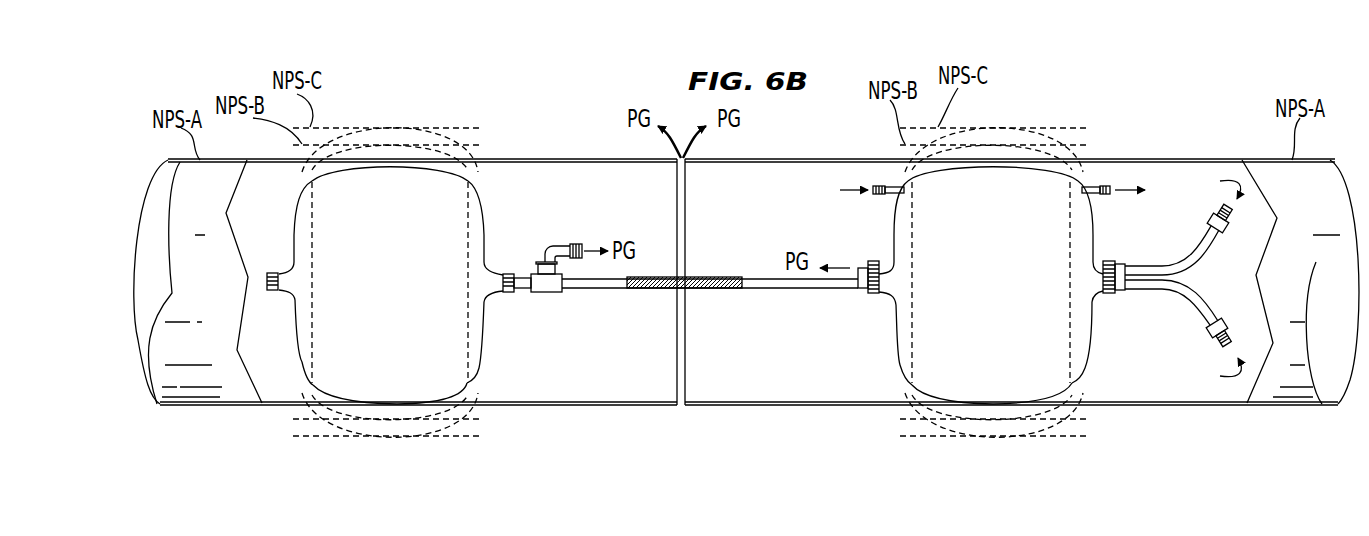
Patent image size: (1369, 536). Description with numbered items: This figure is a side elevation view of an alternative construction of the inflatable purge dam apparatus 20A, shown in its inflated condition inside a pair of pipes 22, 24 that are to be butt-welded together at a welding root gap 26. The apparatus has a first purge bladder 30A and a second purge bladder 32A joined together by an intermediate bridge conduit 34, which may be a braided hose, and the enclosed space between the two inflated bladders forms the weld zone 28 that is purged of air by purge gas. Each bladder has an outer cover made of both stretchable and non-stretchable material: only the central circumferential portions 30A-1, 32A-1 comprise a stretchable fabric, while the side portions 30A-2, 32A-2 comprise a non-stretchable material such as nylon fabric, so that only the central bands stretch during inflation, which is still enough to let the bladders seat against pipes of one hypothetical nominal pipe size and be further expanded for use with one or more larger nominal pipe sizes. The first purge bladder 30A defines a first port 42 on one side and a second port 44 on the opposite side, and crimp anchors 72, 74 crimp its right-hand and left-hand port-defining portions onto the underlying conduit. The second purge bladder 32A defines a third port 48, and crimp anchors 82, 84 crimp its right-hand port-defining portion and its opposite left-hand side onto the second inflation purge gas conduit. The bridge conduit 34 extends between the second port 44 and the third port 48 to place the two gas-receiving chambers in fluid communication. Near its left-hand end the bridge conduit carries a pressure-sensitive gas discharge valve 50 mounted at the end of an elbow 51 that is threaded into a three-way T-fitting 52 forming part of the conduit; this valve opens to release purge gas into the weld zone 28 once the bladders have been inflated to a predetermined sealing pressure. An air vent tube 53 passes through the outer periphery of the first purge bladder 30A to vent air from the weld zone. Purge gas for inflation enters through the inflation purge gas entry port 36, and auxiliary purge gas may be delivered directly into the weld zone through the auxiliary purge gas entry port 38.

The inflatable purge dam apparatus 20A is at (1088, 175).
The pipe 22 is at (1272, 385).
The pipe 24 is at (226, 383).
The welding root gap 26 is at (682, 410).
The weld zone 28 is at (770, 220).
The first purge bladder 30A is at (976, 321).
The central circumferential portion 30A-1 is at (975, 378).
The side portion 30A-2 is at (908, 352).
The second purge bladder 32A is at (441, 320).
The central circumferential portion 32A-1 is at (402, 368).
The side portion 32A-2 is at (482, 346).
The bridge conduit 34 is at (773, 290).
The inflation purge gas entry port 36 is at (1214, 338).
The auxiliary purge gas entry port 38 is at (1214, 207).
The first port 42 is at (1120, 297).
The second port 44 is at (862, 292).
The third port 48 is at (514, 294).
The pressure-sensitive gas discharge valve 50 is at (572, 242).
The elbow 51 is at (545, 246).
The three-way T-fitting 52 is at (548, 294).
The air vent tube 53 is at (878, 183).
The crimp anchor 72 is at (1112, 262).
The crimp anchor 74 is at (878, 262).
The crimp anchor 82 is at (504, 272).
The crimp anchor 84 is at (276, 272).